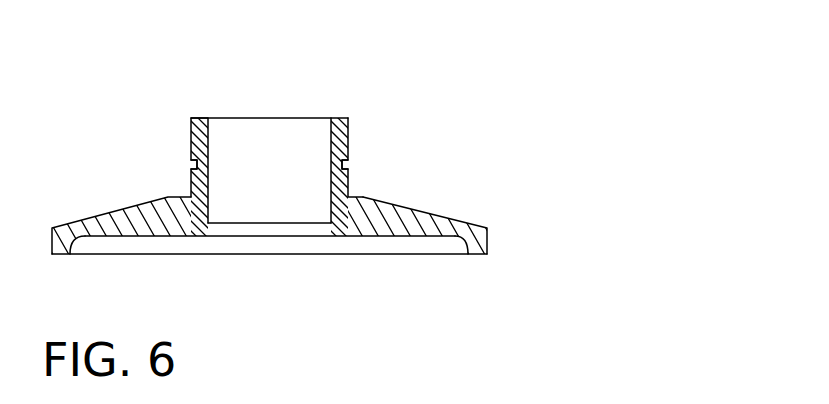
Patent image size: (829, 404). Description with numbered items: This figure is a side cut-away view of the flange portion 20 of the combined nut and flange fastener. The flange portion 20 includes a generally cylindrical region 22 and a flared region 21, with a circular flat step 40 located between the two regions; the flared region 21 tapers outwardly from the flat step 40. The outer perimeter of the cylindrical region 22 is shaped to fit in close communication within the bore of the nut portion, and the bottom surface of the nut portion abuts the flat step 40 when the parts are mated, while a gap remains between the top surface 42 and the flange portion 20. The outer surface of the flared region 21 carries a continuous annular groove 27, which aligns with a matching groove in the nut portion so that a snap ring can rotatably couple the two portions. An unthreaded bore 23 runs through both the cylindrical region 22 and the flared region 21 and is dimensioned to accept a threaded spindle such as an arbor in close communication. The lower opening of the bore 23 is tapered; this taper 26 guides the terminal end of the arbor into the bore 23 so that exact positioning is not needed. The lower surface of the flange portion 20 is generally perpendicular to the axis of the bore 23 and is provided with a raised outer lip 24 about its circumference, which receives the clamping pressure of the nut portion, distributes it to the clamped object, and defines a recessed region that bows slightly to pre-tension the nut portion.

The flange portion 20 is at (333, 103).
The flared region 21 is at (413, 208).
The cylindrical region 22 is at (192, 185).
The bore 23 is at (250, 208).
The raised outer lip 24 is at (60, 254).
The tapered lower opening 26 is at (335, 228).
The annular groove 27 is at (192, 162).
The flat step 40 is at (355, 195).
The top surface 42 is at (200, 119).